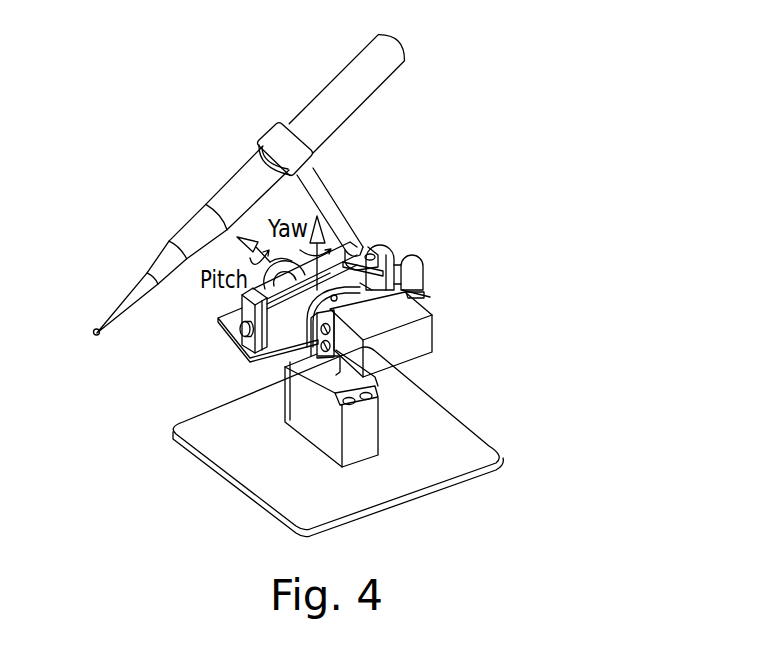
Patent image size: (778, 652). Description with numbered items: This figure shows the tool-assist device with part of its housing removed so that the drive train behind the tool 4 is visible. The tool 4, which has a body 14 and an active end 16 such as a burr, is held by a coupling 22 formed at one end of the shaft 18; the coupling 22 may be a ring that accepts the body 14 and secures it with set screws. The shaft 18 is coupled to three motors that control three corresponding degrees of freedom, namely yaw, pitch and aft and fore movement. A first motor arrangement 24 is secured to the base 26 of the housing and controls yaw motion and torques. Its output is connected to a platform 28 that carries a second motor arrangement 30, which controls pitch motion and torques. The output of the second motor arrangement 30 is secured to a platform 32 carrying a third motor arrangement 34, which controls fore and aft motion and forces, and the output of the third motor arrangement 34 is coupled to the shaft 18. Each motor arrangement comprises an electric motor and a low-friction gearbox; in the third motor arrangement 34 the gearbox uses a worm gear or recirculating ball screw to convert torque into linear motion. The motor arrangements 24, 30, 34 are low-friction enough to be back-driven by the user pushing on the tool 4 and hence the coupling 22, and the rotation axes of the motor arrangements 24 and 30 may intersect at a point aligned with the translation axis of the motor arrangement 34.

The tool 4 is at (398, 43).
The body 14 is at (360, 110).
The active end 16 is at (94, 329).
The shaft 18 is at (330, 196).
The coupling 22 is at (263, 140).
The first motor arrangement 24 is at (363, 428).
The base 26 is at (486, 445).
The platform 28 is at (325, 357).
The second motor arrangement 30 is at (413, 313).
The platform 32 is at (228, 323).
The third motor arrangement 34 is at (242, 349).